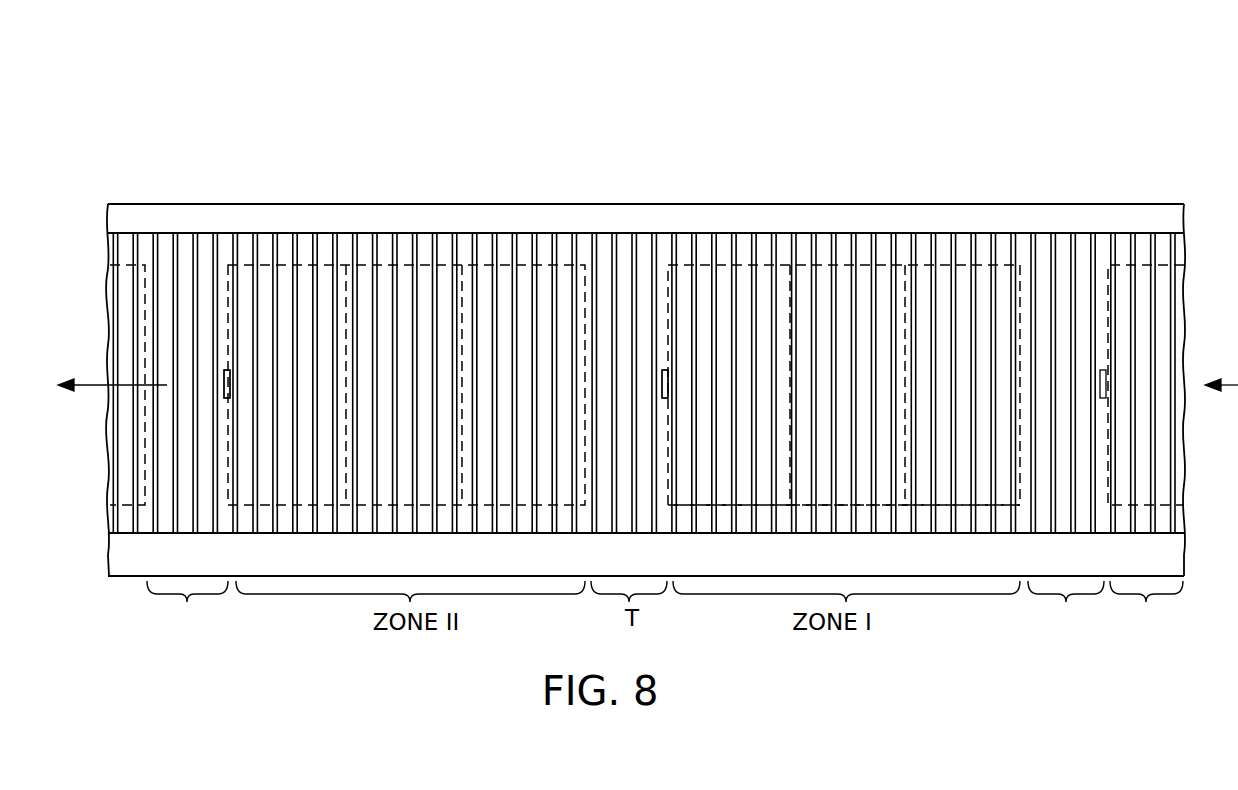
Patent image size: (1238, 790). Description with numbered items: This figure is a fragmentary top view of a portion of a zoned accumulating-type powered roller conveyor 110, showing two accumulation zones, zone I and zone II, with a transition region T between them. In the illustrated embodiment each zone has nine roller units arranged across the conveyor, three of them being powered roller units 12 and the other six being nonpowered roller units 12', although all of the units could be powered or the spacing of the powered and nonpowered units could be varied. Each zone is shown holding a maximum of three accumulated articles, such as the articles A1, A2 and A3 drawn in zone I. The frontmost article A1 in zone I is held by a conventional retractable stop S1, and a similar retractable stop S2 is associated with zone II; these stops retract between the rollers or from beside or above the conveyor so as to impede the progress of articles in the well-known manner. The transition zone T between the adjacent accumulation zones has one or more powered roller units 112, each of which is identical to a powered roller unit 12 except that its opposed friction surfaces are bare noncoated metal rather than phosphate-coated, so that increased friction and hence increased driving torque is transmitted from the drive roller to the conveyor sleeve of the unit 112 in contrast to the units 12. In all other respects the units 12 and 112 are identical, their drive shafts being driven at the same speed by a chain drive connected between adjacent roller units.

The zoned accumulating-type powered roller conveyor 110 is at (287, 98).
The powered roller unit 112 is at (166, 243).
The powered roller unit 12 is at (683, 342).
The nonpowered roller unit 12' is at (641, 354).
The retractable stop S1 is at (664, 398).
The retractable stop S2 is at (226, 398).
The article A1 is at (702, 505).
The article A2 is at (815, 505).
The article A3 is at (943, 505).